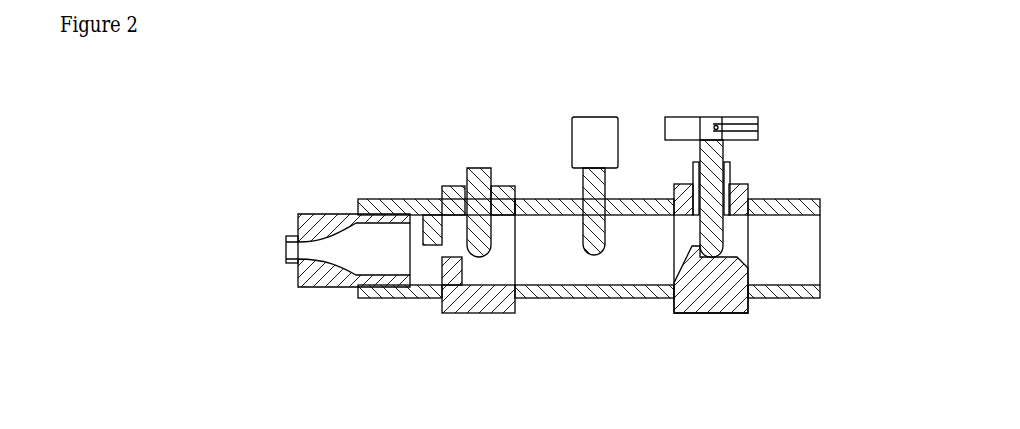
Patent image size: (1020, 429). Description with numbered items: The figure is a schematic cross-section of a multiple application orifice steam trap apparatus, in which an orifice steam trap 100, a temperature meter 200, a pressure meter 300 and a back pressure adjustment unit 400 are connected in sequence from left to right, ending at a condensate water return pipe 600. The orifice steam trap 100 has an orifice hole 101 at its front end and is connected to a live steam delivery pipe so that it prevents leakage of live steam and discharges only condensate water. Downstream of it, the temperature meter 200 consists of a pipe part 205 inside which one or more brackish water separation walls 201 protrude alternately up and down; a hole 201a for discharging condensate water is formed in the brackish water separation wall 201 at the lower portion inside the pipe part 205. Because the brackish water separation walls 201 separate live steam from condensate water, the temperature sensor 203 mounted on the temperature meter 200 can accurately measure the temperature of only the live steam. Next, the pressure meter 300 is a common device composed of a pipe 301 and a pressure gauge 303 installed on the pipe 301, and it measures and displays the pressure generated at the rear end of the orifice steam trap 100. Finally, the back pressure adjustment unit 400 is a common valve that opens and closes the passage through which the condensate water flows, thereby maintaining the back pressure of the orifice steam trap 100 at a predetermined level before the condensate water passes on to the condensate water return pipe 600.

The orifice steam trap 100 is at (319, 288).
The orifice hole 101 is at (286, 248).
The temperature meter 200 is at (446, 330).
The brackish water separation wall 201 is at (440, 232).
The hole 201a is at (455, 277).
The temperature sensor 203 is at (475, 169).
The pipe part 205 is at (499, 302).
The pressure meter 300 is at (594, 223).
The pipe 301 is at (641, 298).
The pressure gauge 303 is at (597, 120).
The back pressure adjustment unit 400 is at (727, 302).
The condensate water return pipe 600 is at (793, 200).